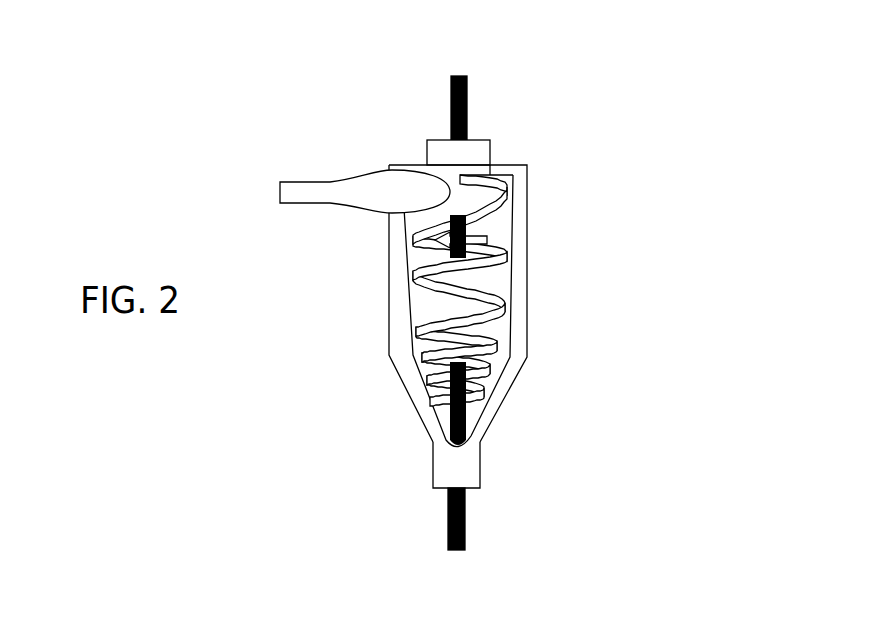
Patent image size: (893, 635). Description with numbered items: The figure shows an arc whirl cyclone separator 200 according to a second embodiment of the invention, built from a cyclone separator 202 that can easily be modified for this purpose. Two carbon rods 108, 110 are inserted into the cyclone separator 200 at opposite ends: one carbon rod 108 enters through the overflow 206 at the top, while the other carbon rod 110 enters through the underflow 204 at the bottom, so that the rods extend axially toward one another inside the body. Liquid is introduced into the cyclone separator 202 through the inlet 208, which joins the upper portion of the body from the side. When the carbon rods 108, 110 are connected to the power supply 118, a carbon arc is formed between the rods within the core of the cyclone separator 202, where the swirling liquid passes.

The arc whirl cyclone separator 200 is at (559, 65).
The power supply 118 is at (454, 310).
The carbon rod 108 is at (451, 99).
The overflow 206 is at (492, 152).
The cyclone separator 202 is at (527, 288).
The underflow 204 is at (482, 460).
The carbon rod 110 is at (467, 525).
The inlet 208 is at (278, 193).